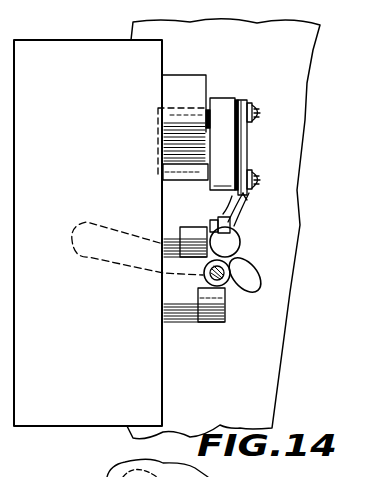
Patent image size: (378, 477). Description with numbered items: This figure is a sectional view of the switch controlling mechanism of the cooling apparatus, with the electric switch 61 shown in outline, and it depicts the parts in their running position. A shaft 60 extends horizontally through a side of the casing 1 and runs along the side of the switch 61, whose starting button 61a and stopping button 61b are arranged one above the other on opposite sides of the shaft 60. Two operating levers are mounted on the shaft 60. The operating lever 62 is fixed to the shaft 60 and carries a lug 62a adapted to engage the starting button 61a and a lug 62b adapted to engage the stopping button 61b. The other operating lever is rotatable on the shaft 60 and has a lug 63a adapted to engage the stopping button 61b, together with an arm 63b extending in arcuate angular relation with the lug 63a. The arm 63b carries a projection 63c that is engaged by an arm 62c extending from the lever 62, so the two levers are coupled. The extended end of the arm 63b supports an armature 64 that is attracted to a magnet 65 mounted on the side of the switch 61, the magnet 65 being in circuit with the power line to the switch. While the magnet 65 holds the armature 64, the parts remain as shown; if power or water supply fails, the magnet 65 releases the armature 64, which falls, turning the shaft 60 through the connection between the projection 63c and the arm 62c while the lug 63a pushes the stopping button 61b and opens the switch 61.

The casing 1 is at (268, 400).
The electric switch 61 is at (93, 26).
The starting button 61a is at (163, 255).
The stopping button 61b is at (210, 305).
The shaft 60 is at (207, 278).
The operating lever 62 is at (244, 255).
The lug 62a is at (247, 211).
The lug 62b is at (205, 236).
The arm 62c is at (247, 200).
The lug 63a is at (253, 284).
The arm 63b is at (245, 138).
The projection 63c is at (211, 219).
The armature 64 is at (228, 100).
The magnet 65 is at (185, 87).